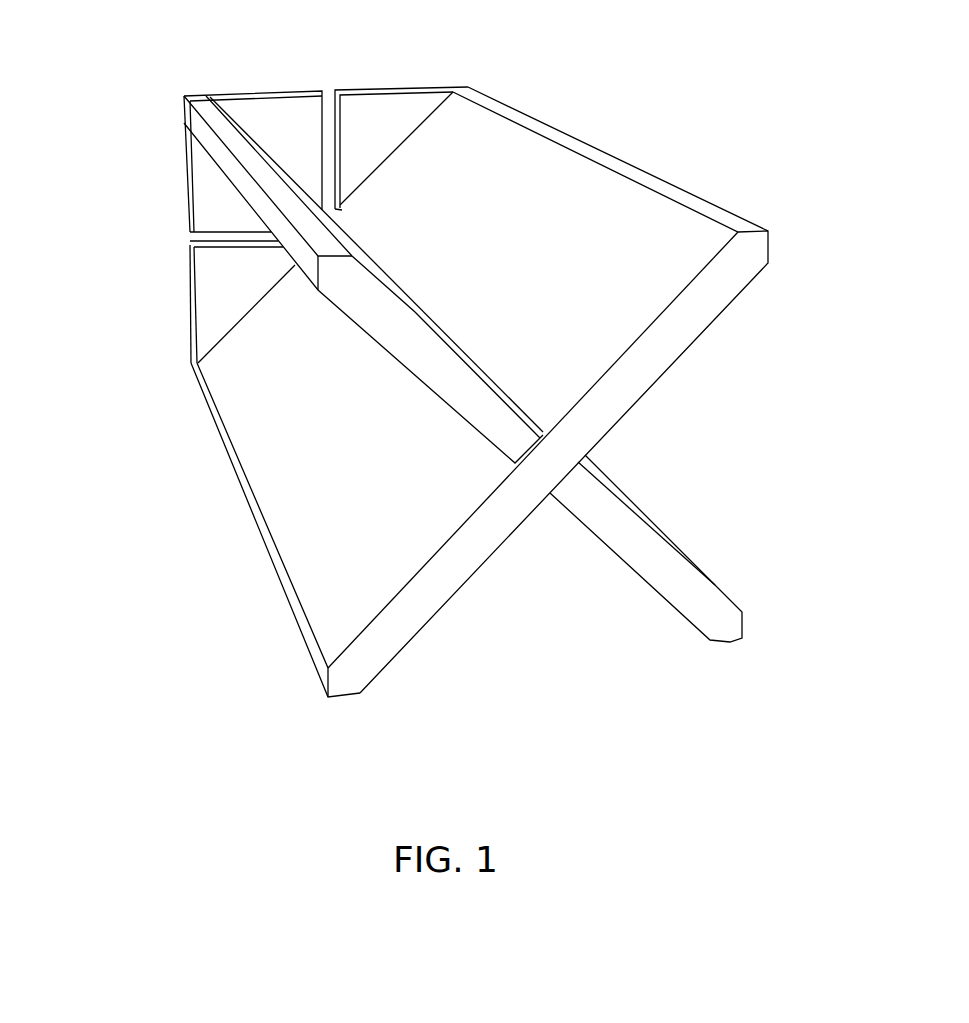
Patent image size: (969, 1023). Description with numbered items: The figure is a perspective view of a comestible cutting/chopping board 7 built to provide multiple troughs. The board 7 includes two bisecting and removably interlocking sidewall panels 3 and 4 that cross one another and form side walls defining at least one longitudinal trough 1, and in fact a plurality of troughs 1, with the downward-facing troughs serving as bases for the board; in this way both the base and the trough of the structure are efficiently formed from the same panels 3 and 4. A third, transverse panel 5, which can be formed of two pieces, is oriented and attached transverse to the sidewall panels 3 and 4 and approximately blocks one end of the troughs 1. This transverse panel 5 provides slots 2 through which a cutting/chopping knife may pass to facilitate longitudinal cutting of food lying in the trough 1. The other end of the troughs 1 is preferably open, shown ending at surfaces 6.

The trough 1 is at (471, 364).
The slot 2 is at (188, 240).
The sidewall panel 3 is at (590, 318).
The sidewall panel 4 is at (393, 283).
The transverse panel 5 is at (272, 112).
The end surface 6 is at (355, 663).
The cutting/chopping board 7 is at (75, 95).